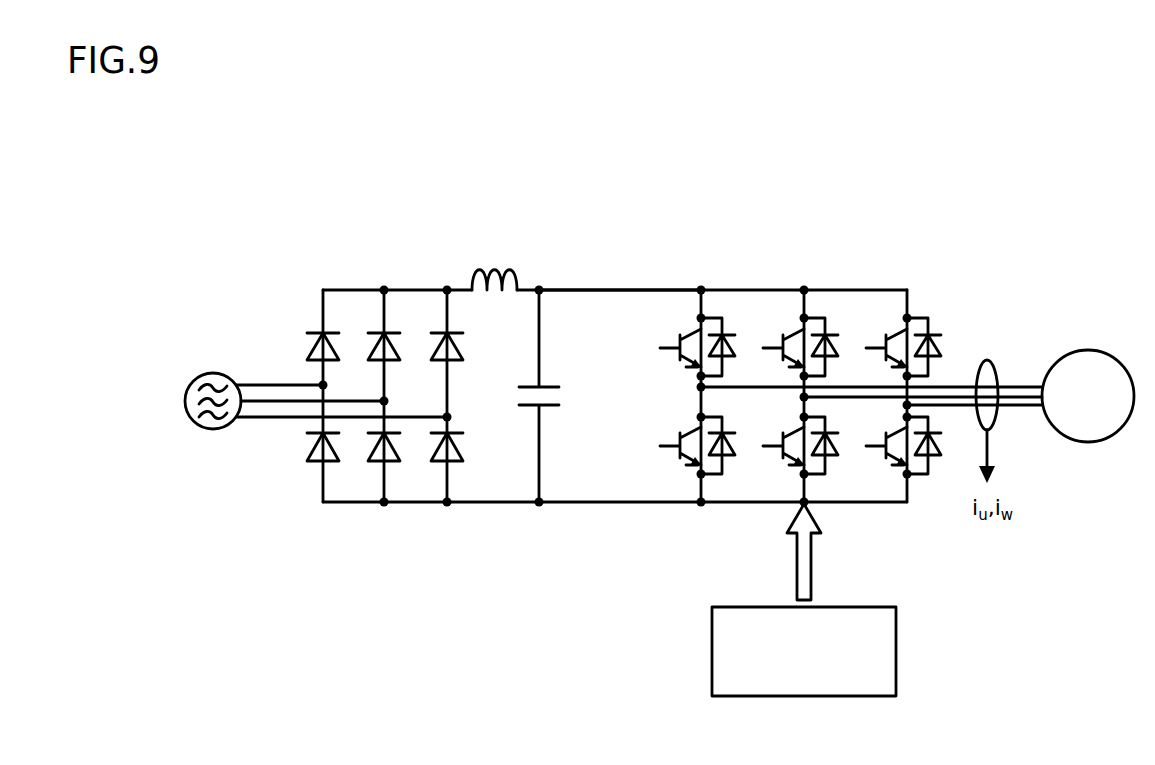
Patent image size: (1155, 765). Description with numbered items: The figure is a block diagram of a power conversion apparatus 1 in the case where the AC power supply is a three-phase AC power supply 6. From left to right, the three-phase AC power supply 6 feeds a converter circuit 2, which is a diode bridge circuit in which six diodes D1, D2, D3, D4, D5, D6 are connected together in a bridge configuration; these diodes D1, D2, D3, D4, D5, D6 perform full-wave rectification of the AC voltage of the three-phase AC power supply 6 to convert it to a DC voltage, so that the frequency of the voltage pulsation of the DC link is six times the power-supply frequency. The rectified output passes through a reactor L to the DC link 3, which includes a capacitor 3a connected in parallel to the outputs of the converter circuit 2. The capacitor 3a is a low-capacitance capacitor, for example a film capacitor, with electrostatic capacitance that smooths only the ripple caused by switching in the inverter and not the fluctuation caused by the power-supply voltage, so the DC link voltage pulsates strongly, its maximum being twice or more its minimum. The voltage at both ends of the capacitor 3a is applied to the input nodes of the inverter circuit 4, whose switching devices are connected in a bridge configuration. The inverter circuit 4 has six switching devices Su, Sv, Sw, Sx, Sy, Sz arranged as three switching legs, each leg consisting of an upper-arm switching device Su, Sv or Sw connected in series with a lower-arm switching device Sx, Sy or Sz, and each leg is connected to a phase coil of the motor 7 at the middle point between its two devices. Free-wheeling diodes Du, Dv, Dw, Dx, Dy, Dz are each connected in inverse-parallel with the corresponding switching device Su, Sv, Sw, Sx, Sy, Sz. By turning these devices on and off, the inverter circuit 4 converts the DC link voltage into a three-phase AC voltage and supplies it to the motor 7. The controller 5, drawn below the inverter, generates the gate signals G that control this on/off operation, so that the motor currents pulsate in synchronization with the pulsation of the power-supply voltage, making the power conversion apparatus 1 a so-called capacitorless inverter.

The power conversion apparatus 1 is at (718, 178).
The converter circuit 2 is at (395, 362).
The DC link 3 is at (539, 362).
The capacitor 3a is at (516, 410).
The inverter circuit 4 is at (801, 362).
The controller 5 is at (835, 600).
The three-phase AC power supply 6 is at (212, 373).
The motor 7 is at (1087, 350).
The reactor L is at (490, 268).
The diode D1 is at (347, 320).
The diode D2 is at (408, 320).
The diode D3 is at (471, 320).
The diode D4 is at (336, 461).
The diode D5 is at (397, 461).
The diode D6 is at (460, 461).
The upper-arm switching device Su is at (680, 360).
The upper-arm switching device Sv is at (783, 360).
The upper-arm switching device Sw is at (886, 360).
The lower-arm switching device Sx is at (680, 436).
The lower-arm switching device Sy is at (783, 436).
The lower-arm switching device Sz is at (886, 436).
The free-wheeling diode Du is at (733, 335).
The free-wheeling diode Dv is at (836, 335).
The free-wheeling diode Dw is at (939, 335).
The free-wheeling diode Dx is at (733, 455).
The free-wheeling diode Dy is at (836, 455).
The free-wheeling diode Dz is at (939, 455).
The gate signals G is at (812, 552).